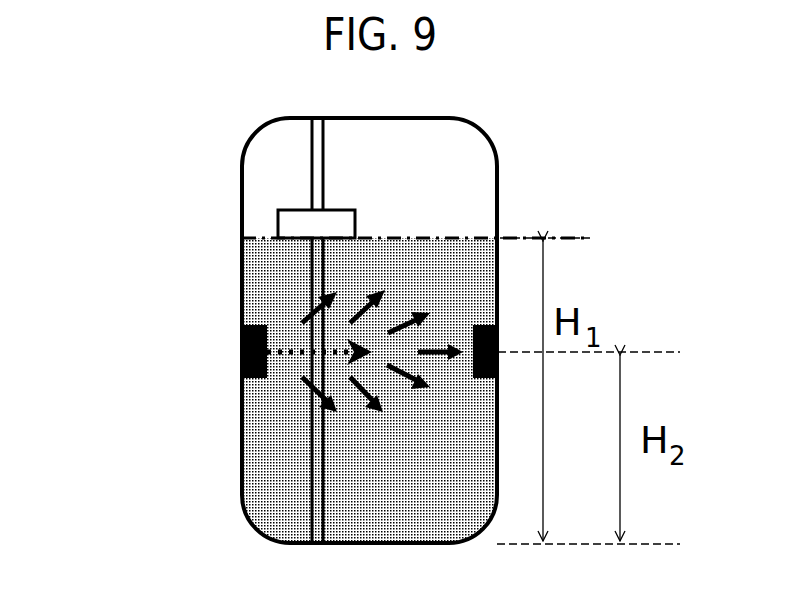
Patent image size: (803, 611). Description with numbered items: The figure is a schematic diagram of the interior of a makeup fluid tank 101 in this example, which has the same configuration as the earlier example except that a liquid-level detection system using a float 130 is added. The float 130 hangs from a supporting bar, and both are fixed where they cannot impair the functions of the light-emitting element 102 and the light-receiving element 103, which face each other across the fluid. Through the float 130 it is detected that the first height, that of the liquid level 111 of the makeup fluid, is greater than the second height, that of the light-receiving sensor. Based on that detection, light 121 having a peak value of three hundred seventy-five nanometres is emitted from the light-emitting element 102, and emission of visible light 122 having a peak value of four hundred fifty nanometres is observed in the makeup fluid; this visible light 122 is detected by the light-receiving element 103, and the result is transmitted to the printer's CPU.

The container / vessel 101 is at (242, 208).
The light-emitting element 102 is at (243, 308).
The light-receiving element 103 is at (497, 315).
The liquid level 111 is at (450, 238).
The light 121 is at (295, 353).
The visible light 122 is at (449, 358).
The float 130 is at (328, 223).